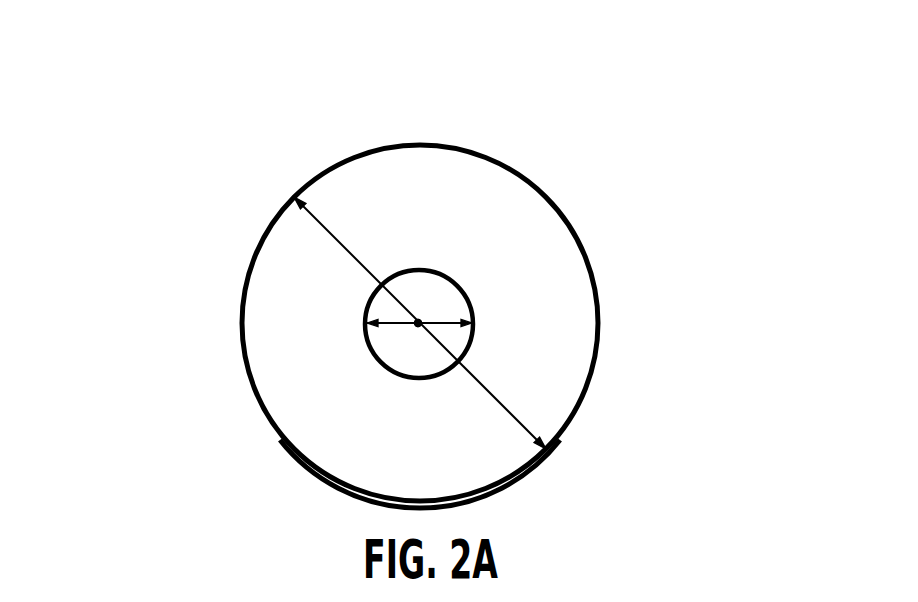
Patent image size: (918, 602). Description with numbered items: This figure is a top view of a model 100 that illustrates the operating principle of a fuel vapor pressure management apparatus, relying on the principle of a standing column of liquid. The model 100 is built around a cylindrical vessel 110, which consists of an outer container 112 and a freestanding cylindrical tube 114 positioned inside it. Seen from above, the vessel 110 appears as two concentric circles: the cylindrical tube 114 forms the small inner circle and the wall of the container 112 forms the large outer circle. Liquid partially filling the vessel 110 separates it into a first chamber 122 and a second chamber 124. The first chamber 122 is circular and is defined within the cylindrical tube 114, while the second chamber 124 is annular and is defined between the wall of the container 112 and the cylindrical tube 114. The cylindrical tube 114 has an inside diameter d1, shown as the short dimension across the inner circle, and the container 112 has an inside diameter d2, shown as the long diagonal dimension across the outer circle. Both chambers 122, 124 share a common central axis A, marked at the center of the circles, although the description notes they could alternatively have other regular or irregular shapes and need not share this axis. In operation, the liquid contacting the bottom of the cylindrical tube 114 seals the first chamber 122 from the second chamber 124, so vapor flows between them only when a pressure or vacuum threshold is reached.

The model 100 is at (258, 87).
The cylindrical vessel 110 is at (248, 237).
The container 112 is at (587, 393).
The cylindrical tube 114 is at (422, 270).
The first chamber 122 is at (440, 297).
The second chamber 124 is at (545, 339).
The inside diameter of the cylindrical tube d1 is at (392, 325).
The inside diameter of the container d2 is at (350, 257).
The central axis A is at (417, 324).